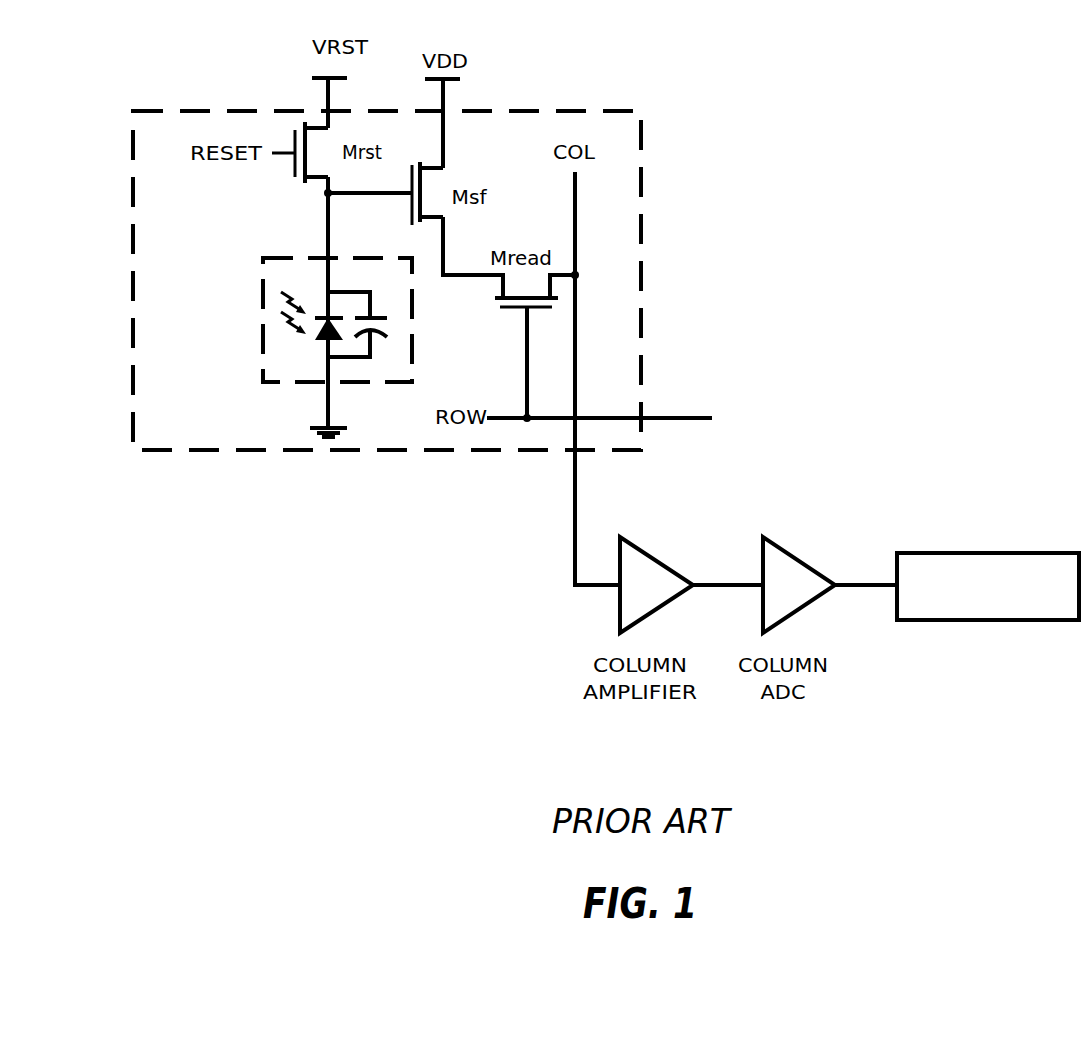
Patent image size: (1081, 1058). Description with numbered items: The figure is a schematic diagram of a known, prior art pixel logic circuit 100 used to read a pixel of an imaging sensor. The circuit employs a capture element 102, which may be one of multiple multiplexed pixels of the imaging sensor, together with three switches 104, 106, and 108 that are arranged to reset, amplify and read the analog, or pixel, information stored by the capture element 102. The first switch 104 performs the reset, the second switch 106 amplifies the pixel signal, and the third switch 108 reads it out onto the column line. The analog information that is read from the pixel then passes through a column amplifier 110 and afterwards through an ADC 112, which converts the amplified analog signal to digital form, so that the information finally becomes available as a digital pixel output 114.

The pixel logic circuit 100 is at (652, 230).
The capture element 102 is at (262, 333).
The switch 104 is at (294, 166).
The switch 106 is at (455, 168).
The switch 108 is at (499, 287).
The column amplifier 110 is at (654, 552).
The ADC 112 is at (794, 552).
The digital pixel output 114 is at (985, 552).